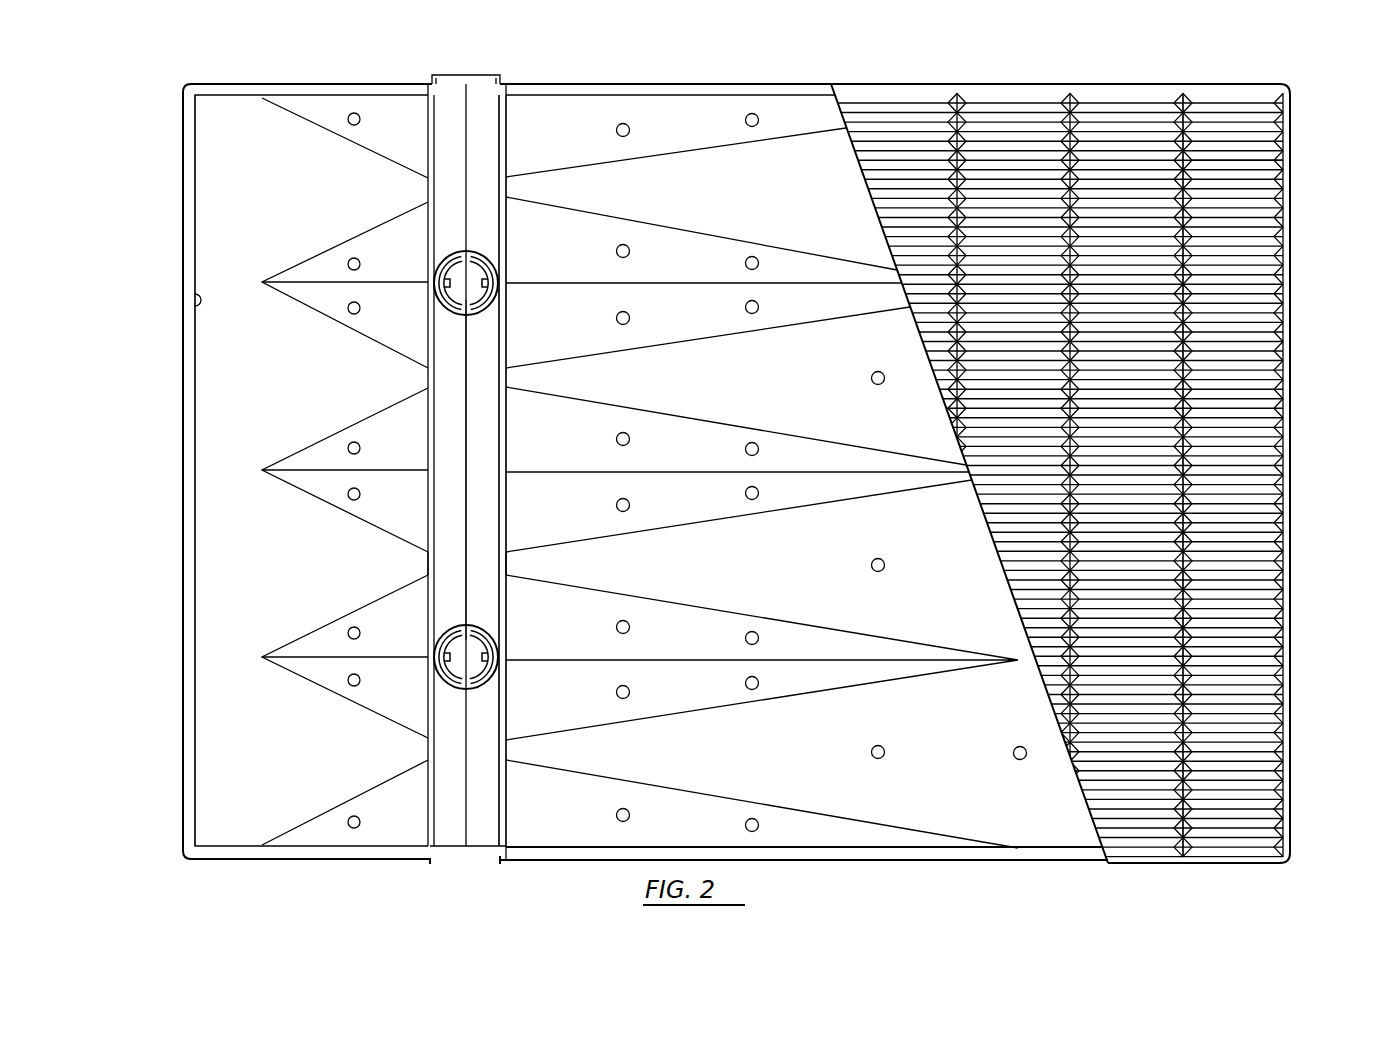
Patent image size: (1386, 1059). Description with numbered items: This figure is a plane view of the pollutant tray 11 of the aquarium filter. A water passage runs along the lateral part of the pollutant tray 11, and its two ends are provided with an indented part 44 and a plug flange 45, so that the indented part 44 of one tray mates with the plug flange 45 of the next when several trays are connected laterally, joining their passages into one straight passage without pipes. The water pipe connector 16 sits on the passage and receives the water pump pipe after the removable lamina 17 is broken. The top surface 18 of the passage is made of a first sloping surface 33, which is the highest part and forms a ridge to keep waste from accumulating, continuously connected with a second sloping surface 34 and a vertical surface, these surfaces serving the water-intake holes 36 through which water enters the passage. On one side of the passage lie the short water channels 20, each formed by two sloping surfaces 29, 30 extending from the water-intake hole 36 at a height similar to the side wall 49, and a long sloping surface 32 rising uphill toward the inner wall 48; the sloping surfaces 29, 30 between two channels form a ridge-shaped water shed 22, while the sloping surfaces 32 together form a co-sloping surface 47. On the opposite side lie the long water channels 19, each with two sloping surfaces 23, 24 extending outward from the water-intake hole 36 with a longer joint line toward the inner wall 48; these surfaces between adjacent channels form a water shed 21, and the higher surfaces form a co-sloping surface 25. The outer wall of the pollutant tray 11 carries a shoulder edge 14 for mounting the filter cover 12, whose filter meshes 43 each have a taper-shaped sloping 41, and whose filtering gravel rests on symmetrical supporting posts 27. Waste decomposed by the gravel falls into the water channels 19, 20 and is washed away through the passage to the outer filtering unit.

The pollutant tray 11 is at (197, 562).
The filter cover 12 is at (1205, 135).
The shoulder edge 14 is at (183, 493).
The water pipe connector 16 is at (502, 178).
The removable lamina 17 is at (475, 280).
The top surface 18 is at (506, 520).
The long water channel 19 is at (733, 197).
The short water channel 20 is at (368, 381).
The water shed 21 is at (687, 472).
The ridge-shaped water shed 22 is at (387, 470).
The sloping surface 23 is at (786, 455).
The sloping surface 24 is at (787, 305).
The co-sloping surface 25 is at (918, 428).
The supporting post 27 is at (875, 377).
The sloping surface 29 is at (335, 455).
The sloping surface 30 is at (335, 490).
The sloping surface 32 is at (310, 182).
The first sloping surface 33 is at (506, 412).
The second sloping surface 34 is at (506, 446).
The water-intake hole 36 is at (428, 562).
The taper-shaped sloping 41 is at (1265, 150).
The filter mesh 43 is at (1265, 190).
The indented part 44 is at (455, 860).
The plug flange 45 is at (490, 80).
The co-sloping surface 47 is at (232, 148).
The inner wall 48 is at (200, 300).
The side wall 49 is at (697, 107).